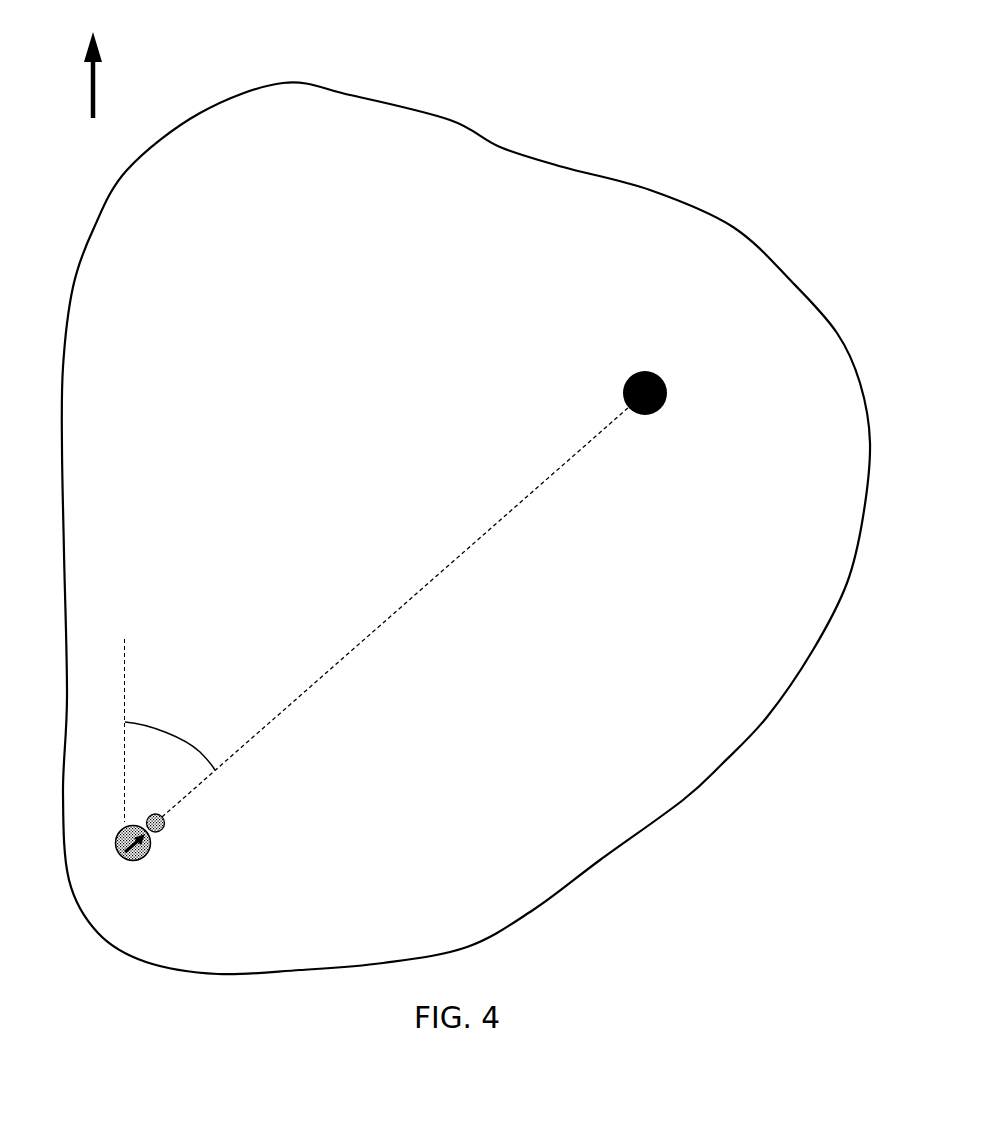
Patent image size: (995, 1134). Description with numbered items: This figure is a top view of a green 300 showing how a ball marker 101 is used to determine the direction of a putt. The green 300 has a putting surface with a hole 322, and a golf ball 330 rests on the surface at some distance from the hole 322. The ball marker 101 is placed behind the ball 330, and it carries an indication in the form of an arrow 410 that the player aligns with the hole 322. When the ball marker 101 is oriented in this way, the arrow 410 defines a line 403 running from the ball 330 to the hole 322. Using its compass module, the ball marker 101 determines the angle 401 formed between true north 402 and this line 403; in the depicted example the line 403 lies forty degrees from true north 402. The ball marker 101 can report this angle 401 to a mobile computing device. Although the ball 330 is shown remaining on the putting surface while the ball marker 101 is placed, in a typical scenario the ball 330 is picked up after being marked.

The green 300 is at (477, 36).
The hole 322 is at (667, 402).
The line 403 is at (432, 583).
The angle 401 is at (190, 695).
The true north 402 is at (110, 68).
The golf ball 330 is at (165, 827).
The ball marker 101 is at (150, 848).
The arrow 410 is at (145, 858).